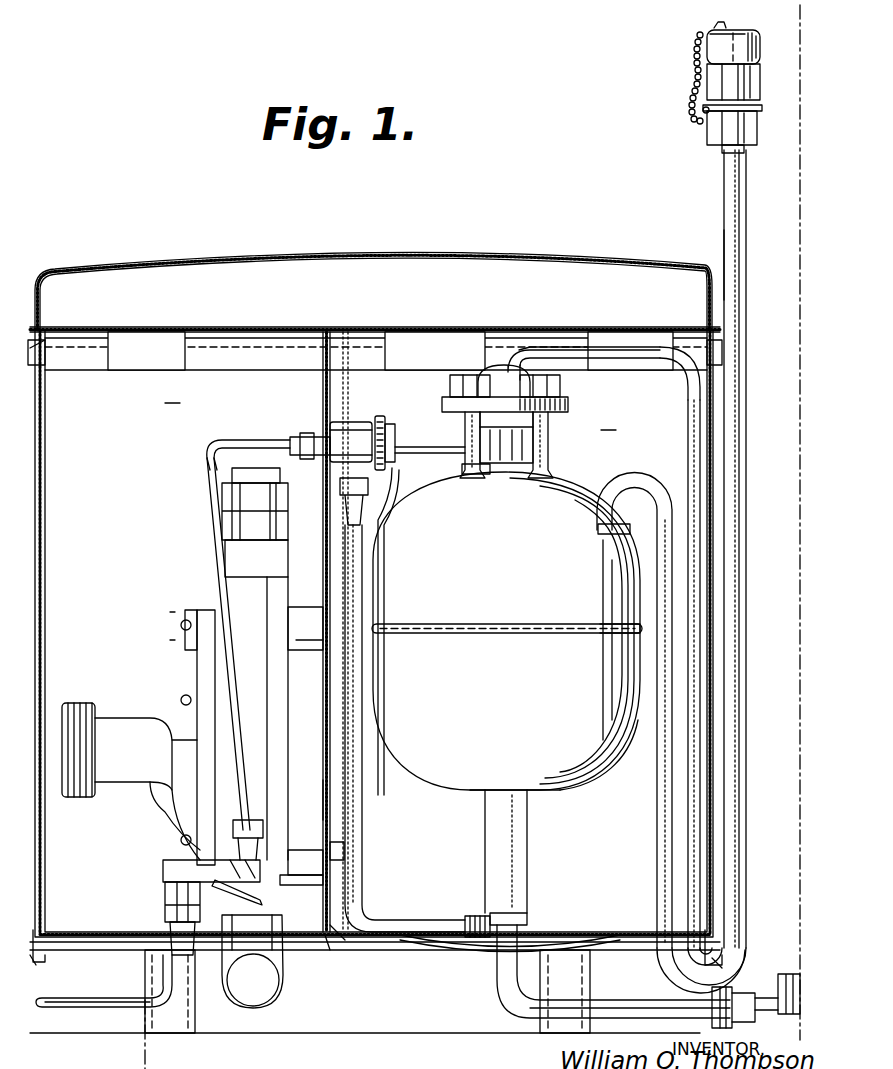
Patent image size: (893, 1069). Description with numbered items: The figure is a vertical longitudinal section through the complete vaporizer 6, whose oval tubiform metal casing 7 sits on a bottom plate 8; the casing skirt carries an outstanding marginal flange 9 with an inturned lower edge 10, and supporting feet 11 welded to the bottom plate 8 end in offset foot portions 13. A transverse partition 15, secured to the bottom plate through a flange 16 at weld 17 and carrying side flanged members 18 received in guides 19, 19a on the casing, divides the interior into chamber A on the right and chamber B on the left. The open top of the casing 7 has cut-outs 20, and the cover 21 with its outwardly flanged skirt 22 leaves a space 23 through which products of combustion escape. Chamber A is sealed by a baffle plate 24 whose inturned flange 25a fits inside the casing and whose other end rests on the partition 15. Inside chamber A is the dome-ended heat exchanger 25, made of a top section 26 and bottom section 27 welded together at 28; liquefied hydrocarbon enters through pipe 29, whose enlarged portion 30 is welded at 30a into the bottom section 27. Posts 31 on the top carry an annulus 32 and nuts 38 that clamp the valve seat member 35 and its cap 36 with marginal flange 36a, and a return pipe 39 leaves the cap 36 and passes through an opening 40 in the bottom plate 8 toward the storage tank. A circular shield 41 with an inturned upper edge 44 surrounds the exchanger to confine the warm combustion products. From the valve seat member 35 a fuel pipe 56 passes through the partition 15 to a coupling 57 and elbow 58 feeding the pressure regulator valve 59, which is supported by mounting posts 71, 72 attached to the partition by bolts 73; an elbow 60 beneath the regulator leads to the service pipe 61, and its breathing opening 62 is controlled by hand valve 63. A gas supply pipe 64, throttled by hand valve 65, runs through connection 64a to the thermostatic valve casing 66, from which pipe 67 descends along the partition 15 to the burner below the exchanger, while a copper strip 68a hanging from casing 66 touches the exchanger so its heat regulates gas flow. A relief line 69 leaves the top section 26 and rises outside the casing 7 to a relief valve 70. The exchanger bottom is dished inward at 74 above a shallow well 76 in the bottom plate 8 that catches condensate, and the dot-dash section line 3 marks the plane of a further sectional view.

The section line 3 is at (789, 529).
The vaporizer 6 is at (152, 545).
The oval tubiform metal casing 7 is at (720, 452).
The bottom plate 8 is at (116, 952).
The outstanding marginal flange 9 is at (38, 935).
The inturned lower edge 10 is at (36, 960).
The legs 11 is at (570, 972).
The offset foot portions 13 is at (138, 1034).
The transverse partition 15 is at (322, 802).
The flange 16 is at (345, 945).
The weld 17 is at (333, 948).
The flanged members 18 is at (335, 342).
The guide 19 is at (344, 357).
The guide 19a is at (306, 352).
The cut-outs 20 is at (104, 360).
The cover 21 is at (440, 256).
The outwardly flanged skirt portion 22 is at (35, 345).
The space 23 is at (42, 362).
The baffle plate 24 is at (548, 345).
The heat exchanger 25 is at (522, 587).
The inturned flange 25a is at (722, 270).
The top section 26 is at (570, 500).
The bottom section 27 is at (618, 770).
The weld 28 is at (625, 636).
The pipe 29 is at (496, 983).
The enlarged portion 30 is at (528, 864).
The weld 30a is at (540, 788).
The bolts 31 is at (535, 452).
The annulus 32 is at (568, 405).
The valve seat member 35 is at (505, 466).
The cap 36 is at (500, 380).
The lower offset marginal flange 36a is at (474, 476).
The nuts 38 is at (450, 386).
The return pipe 39 is at (686, 388).
The opening 40 is at (684, 930).
The shield member 41 is at (700, 590).
The inturned upper edge 44 is at (625, 530).
The fuel pipe 56 is at (412, 445).
The coupling 57 is at (300, 433).
The elbow 58 is at (246, 440).
The pressure regulator valve 59 is at (130, 715).
The elbow 60 is at (284, 966).
The pipe 61 is at (272, 1000).
The valve controlled opening 62 is at (165, 876).
The hand valve 63 is at (90, 1010).
The gas supply pipe 64 is at (232, 690).
The connection 64a is at (303, 455).
The hand valve 65 is at (230, 900).
The thermostatic valve casing 66 is at (356, 425).
The pipe 67 is at (357, 810).
The copper strip 68a is at (396, 498).
The relief line 69 is at (628, 480).
The relief valve 70 is at (733, 40).
The mounting post 71 is at (298, 606).
The mounting post 72 is at (305, 858).
The bolts 73 is at (344, 852).
The dished bottom 74 is at (350, 626).
The shallow well portion 76 is at (548, 940).
The chamber A is at (607, 421).
The chamber B is at (172, 394).